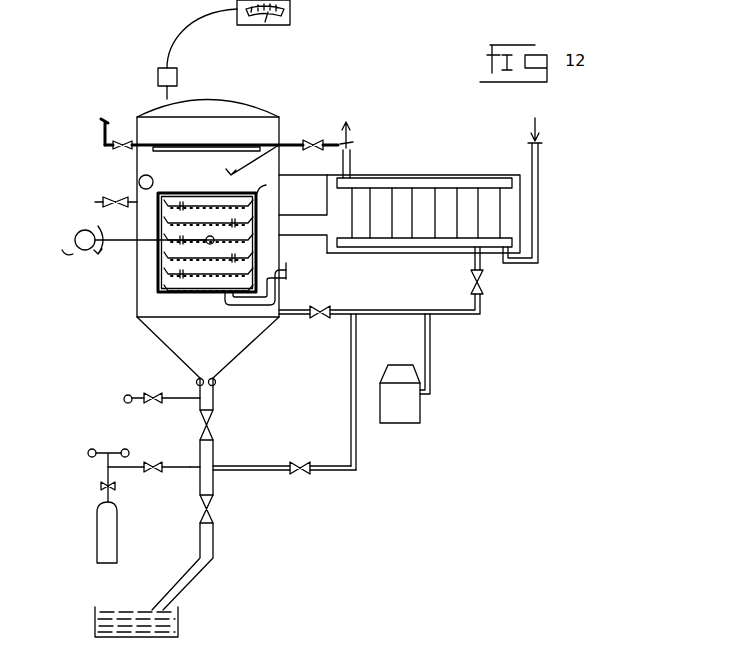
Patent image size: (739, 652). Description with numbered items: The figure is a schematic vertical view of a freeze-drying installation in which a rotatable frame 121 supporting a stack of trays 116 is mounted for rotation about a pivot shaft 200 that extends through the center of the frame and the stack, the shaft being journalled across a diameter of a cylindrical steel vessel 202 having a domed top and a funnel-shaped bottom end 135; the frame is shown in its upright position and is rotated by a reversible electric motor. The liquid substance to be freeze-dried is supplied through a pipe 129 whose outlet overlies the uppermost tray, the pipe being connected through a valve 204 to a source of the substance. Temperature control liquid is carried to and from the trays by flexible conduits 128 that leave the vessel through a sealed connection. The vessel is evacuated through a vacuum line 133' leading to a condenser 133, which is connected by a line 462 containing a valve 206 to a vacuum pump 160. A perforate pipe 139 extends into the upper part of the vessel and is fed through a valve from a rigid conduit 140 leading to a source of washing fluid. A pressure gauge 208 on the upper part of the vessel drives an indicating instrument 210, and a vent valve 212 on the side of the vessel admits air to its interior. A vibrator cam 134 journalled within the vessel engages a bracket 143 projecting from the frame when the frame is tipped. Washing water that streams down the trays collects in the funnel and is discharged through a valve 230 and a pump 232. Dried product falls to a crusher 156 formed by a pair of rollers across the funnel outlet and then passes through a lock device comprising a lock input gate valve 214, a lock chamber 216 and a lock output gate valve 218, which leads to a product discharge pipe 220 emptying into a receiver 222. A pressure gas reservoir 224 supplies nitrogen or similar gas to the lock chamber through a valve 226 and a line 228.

The pressure gauge 208 is at (160, 65).
The indicating instrument 210 is at (252, 26).
The conduit 140 is at (99, 134).
The perforate pipe 139 is at (194, 142).
The vessel 202 is at (286, 131).
The valve 204 is at (316, 152).
The vibrator cam 134 is at (139, 181).
The vent valve 212 is at (101, 202).
The pipe 129 is at (244, 172).
The rotatable frame 121 is at (186, 192).
The trays 116 is at (170, 287).
The pivot shaft 200 is at (214, 241).
The bracket 143 is at (261, 196).
The flexible conduits 128 is at (225, 302).
The vacuum line 133' is at (303, 214).
The condenser 133 is at (434, 190).
The valve 206 is at (495, 271).
The conduit 462 is at (447, 318).
The vacuum pump 160 is at (415, 400).
The funnel-shaped bottom end 135 is at (151, 339).
The crusher 156 is at (216, 382).
The pump 232 is at (123, 402).
The valve 230 is at (150, 402).
The lock input gate valve 214 is at (212, 415).
The lock chamber 216 is at (216, 466).
The line 228 is at (193, 458).
The valve 226 is at (148, 470).
The pressure gas reservoir 224 is at (97, 533).
The lock output gate valve 218 is at (212, 499).
The product discharge pipe 220 is at (215, 540).
The receiver 222 is at (178, 612).